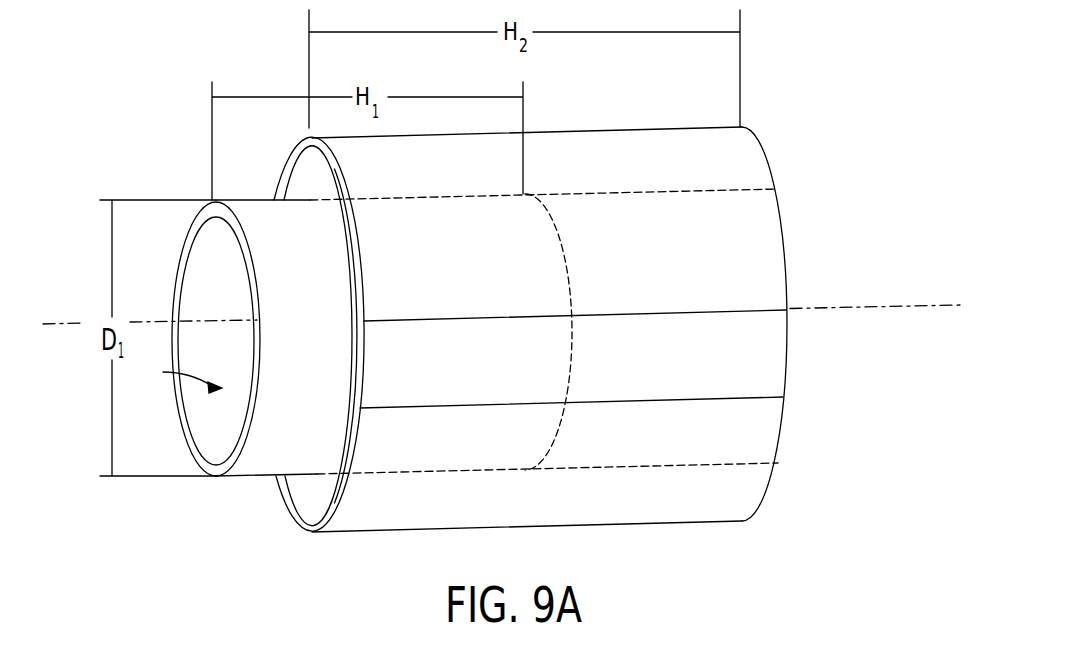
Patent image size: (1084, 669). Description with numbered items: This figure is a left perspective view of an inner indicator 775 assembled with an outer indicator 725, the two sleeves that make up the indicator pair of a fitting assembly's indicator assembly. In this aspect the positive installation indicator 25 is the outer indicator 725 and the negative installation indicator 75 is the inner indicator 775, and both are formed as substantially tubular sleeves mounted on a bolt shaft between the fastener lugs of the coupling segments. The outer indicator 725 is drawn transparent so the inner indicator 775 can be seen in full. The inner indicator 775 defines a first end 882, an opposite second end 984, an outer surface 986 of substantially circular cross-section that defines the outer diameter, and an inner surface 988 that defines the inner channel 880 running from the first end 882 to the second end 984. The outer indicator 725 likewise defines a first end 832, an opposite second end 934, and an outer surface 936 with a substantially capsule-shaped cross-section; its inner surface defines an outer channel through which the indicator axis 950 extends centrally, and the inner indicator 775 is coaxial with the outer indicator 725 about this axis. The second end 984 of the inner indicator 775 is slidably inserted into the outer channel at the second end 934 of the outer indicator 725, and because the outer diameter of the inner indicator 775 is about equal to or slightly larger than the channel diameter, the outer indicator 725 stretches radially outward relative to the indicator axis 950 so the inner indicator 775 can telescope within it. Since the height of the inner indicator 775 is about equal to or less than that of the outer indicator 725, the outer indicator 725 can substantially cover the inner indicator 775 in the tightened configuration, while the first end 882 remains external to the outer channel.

The positive installation indicator 25 is at (567, 353).
The outer indicator 725 is at (567, 353).
The negative installation indicator 75 is at (448, 362).
The inner indicator 775 is at (448, 362).
The first end 832 is at (784, 433).
The inner channel 880 is at (176, 374).
The first end 882 is at (190, 243).
The second end 934 is at (320, 508).
The outer surface 936 is at (755, 492).
The indicator axis 950 is at (904, 302).
The second end 984 is at (567, 413).
The outer surface 986 is at (258, 462).
The inner surface 988 is at (217, 437).